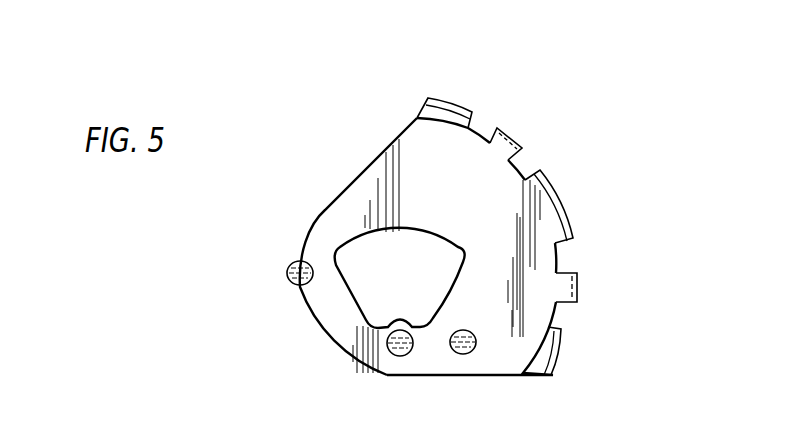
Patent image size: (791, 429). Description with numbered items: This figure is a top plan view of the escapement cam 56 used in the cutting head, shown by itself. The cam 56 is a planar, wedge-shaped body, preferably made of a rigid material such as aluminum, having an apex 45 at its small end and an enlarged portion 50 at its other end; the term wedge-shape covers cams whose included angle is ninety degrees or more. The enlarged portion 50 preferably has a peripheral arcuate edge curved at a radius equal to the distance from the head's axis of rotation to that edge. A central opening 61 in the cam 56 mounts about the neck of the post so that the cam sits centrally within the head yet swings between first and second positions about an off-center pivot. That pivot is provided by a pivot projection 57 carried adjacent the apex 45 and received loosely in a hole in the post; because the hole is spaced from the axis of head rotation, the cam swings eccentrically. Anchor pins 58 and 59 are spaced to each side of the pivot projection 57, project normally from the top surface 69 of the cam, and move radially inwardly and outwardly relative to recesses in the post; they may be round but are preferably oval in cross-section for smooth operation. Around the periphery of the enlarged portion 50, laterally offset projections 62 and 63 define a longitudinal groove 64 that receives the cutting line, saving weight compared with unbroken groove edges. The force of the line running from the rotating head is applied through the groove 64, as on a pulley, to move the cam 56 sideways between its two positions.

The enlarged portion 50 is at (466, 200).
The escapement cam 56 is at (333, 197).
The longitudinal groove 64 is at (558, 262).
The projection 63 is at (450, 107).
The projection 62 is at (510, 133).
The central opening 61 is at (368, 292).
The anchor pin 58 is at (286, 273).
The pivot projection 57 is at (402, 356).
The anchor pin 59 is at (468, 354).
The top surface 69 is at (390, 147).
The apex 45 is at (352, 338).